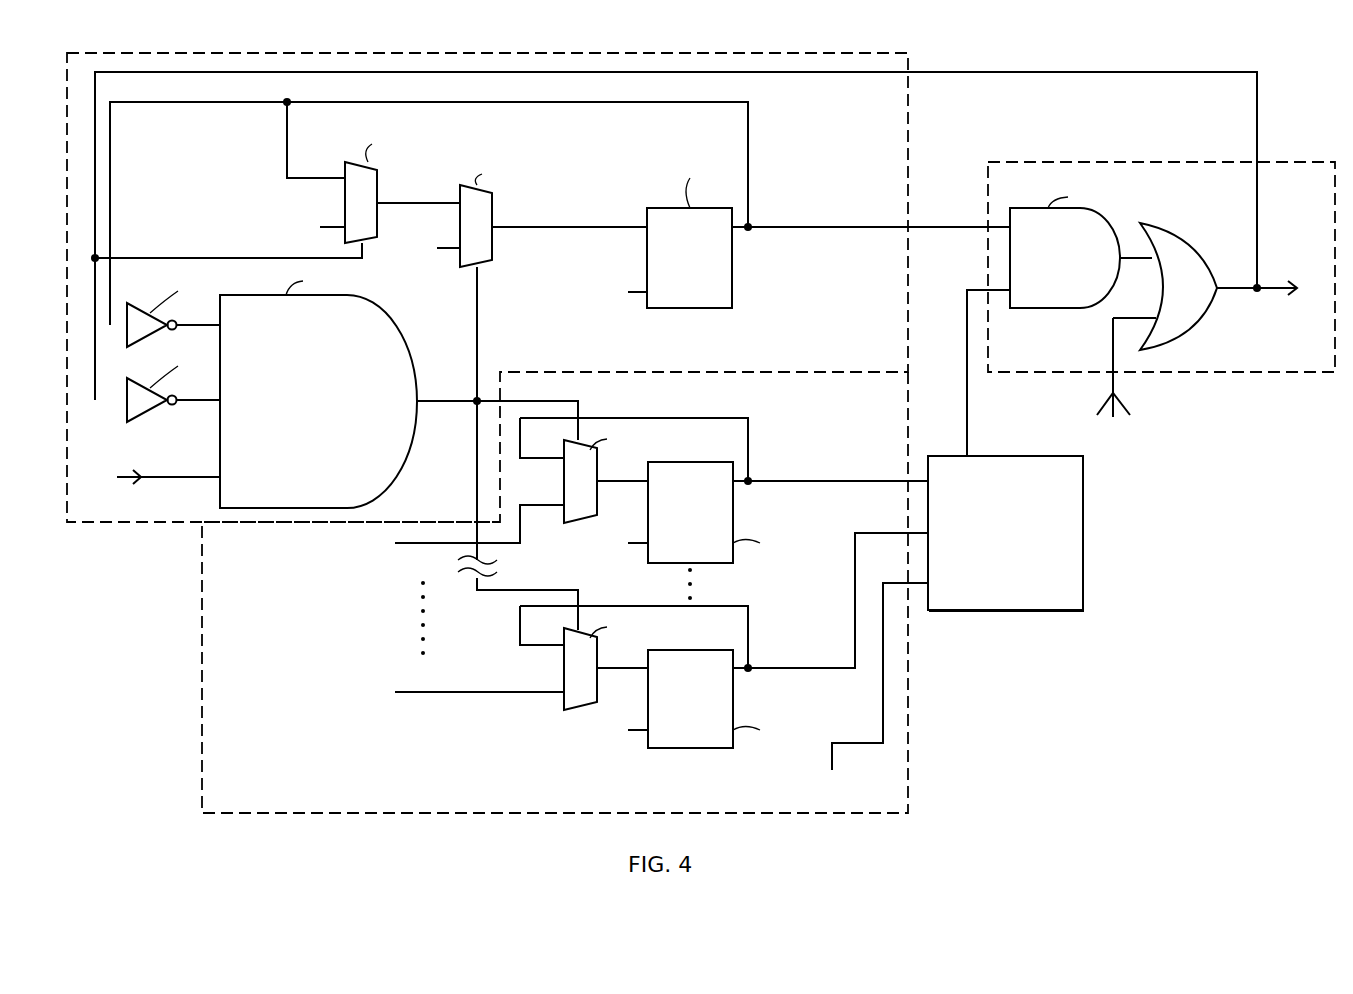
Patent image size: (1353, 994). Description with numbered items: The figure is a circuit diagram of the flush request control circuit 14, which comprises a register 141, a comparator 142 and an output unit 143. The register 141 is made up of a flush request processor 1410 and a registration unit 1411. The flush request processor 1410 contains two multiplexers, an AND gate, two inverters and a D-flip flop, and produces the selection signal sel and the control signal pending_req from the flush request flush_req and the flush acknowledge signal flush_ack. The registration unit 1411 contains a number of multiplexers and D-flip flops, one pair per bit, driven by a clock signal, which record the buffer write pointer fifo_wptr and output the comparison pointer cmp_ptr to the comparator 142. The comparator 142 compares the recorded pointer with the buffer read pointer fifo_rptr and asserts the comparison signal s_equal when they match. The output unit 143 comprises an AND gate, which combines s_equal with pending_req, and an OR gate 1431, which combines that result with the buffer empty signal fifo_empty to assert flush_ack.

The flush request control circuit 14 is at (1178, 763).
The register 141 is at (112, 550).
The flush request processor 1410 is at (178, 523).
The registration unit 1411 is at (200, 607).
The comparator 142 is at (1083, 540).
The output unit 143 is at (1075, 162).
The OR gate 1431 is at (1170, 237).